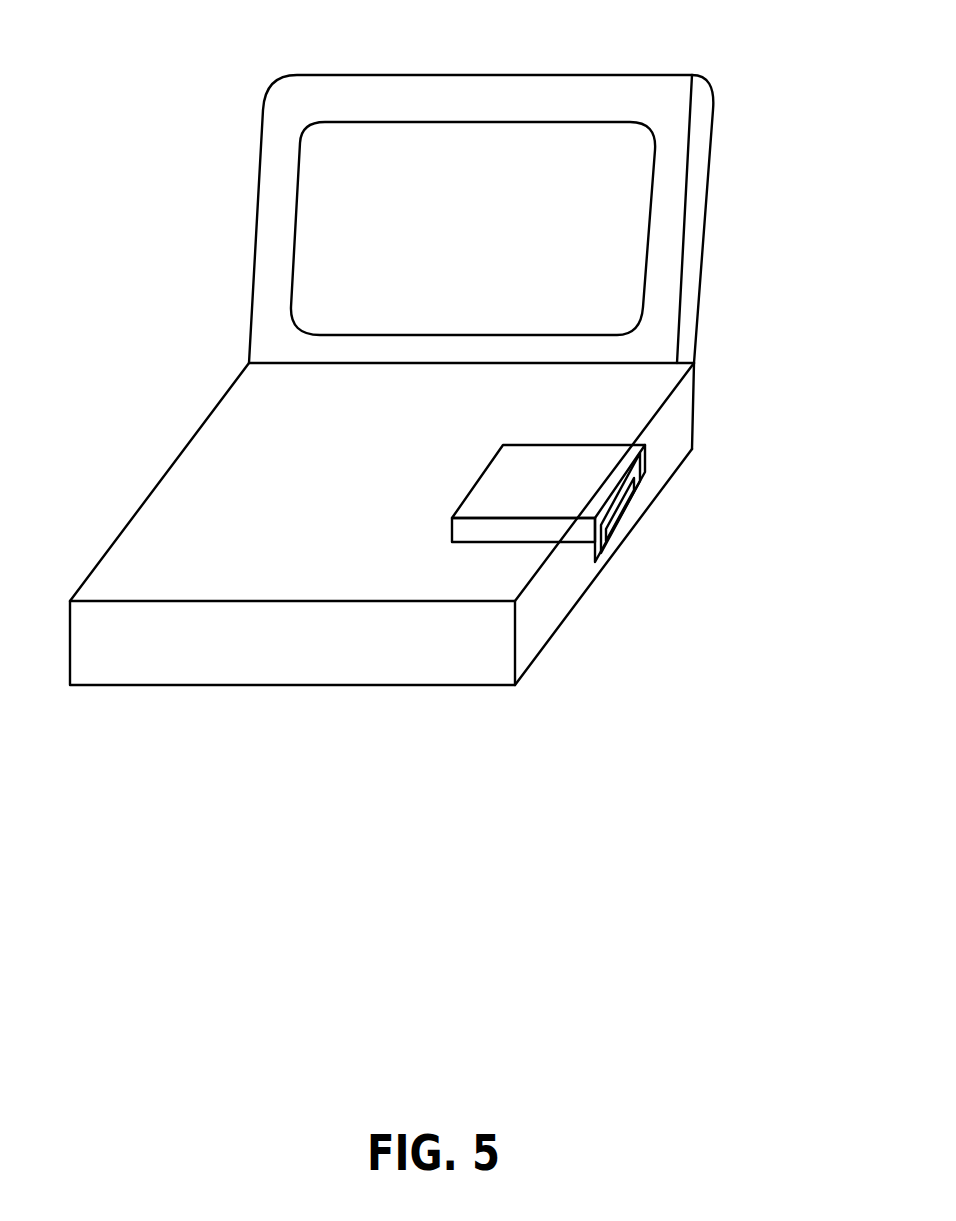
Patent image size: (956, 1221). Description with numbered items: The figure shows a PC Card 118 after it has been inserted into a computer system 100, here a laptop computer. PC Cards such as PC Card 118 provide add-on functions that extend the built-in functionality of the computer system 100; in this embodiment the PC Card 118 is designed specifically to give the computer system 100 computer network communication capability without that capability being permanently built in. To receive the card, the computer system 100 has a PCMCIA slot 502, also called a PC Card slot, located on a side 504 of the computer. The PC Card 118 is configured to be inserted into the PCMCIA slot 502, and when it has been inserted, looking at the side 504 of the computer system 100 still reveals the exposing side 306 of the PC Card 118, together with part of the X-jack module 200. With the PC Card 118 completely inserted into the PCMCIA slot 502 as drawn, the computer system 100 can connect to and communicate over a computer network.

The computer system 100 is at (391, 392).
The PC Card 118 is at (463, 497).
The X-jack module 200 is at (634, 490).
The exposing side 306 is at (613, 513).
The PCMCIA slot 502 is at (645, 467).
The side 504 is at (542, 600).